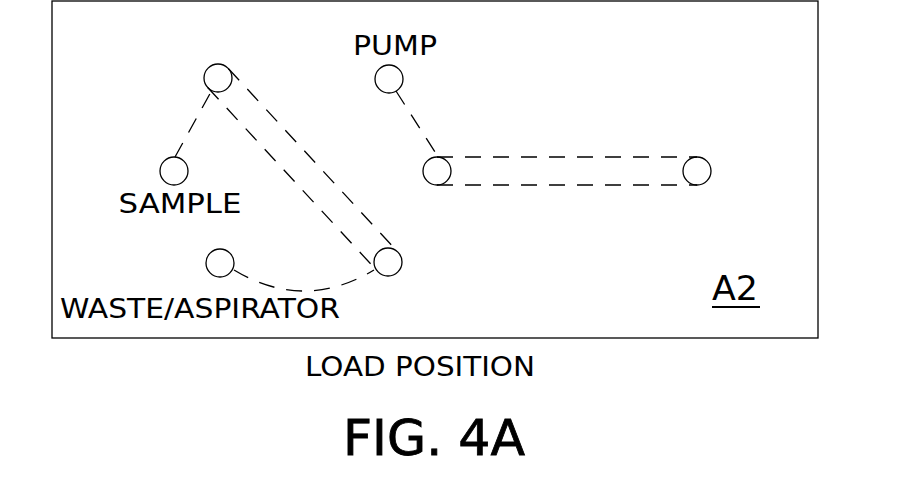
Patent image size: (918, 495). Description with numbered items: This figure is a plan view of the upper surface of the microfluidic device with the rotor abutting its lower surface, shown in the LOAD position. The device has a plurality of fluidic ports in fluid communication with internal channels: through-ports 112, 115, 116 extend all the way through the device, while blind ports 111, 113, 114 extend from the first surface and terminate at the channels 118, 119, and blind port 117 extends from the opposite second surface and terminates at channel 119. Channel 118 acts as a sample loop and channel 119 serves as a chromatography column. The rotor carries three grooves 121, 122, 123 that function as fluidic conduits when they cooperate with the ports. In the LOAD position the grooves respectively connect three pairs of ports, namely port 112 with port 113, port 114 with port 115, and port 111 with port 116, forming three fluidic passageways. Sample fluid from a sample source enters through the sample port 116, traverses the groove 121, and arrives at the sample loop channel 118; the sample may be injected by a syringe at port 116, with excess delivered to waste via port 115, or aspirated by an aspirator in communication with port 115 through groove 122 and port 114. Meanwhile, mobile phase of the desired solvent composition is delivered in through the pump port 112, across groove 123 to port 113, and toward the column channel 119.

The blind port 111 is at (213, 65).
The through-port 112 is at (375, 78).
The blind port 113 is at (453, 138).
The blind port 114 is at (402, 265).
The through-port 115 is at (205, 264).
The through-port 116 is at (159, 171).
The blind port 117 is at (700, 157).
The channel 118 is at (288, 131).
The channel 119 is at (560, 157).
The groove 121 is at (193, 121).
The groove 122 is at (311, 290).
The groove 123 is at (411, 102).